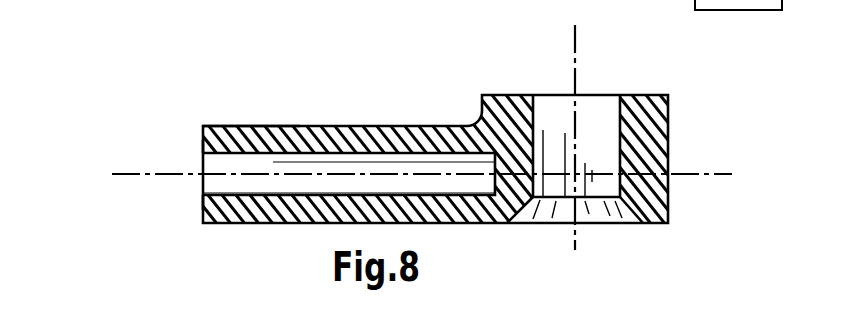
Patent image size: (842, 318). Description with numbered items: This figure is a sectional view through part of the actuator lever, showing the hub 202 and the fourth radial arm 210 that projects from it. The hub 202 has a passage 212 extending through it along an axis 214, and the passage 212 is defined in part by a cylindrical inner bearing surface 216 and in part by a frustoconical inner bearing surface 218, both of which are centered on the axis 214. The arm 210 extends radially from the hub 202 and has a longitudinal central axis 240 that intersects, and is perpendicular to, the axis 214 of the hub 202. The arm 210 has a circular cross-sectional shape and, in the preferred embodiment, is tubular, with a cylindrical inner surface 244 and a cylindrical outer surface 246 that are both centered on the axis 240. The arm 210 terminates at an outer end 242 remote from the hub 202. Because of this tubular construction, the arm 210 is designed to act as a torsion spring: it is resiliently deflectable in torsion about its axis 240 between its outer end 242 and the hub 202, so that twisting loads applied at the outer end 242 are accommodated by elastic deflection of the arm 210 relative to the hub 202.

The hub 202 is at (674, 109).
The fourth radial arm 210 is at (327, 116).
The passage 212 is at (555, 112).
The axis 214 is at (578, 57).
The cylindrical inner bearing surface 216 is at (605, 105).
The frustoconical inner bearing surface 218 is at (606, 217).
The longitudinal central axis 240 is at (117, 174).
The outer end 242 is at (203, 143).
The cylindrical inner surface 244 is at (203, 183).
The cylindrical outer surface 246 is at (243, 126).